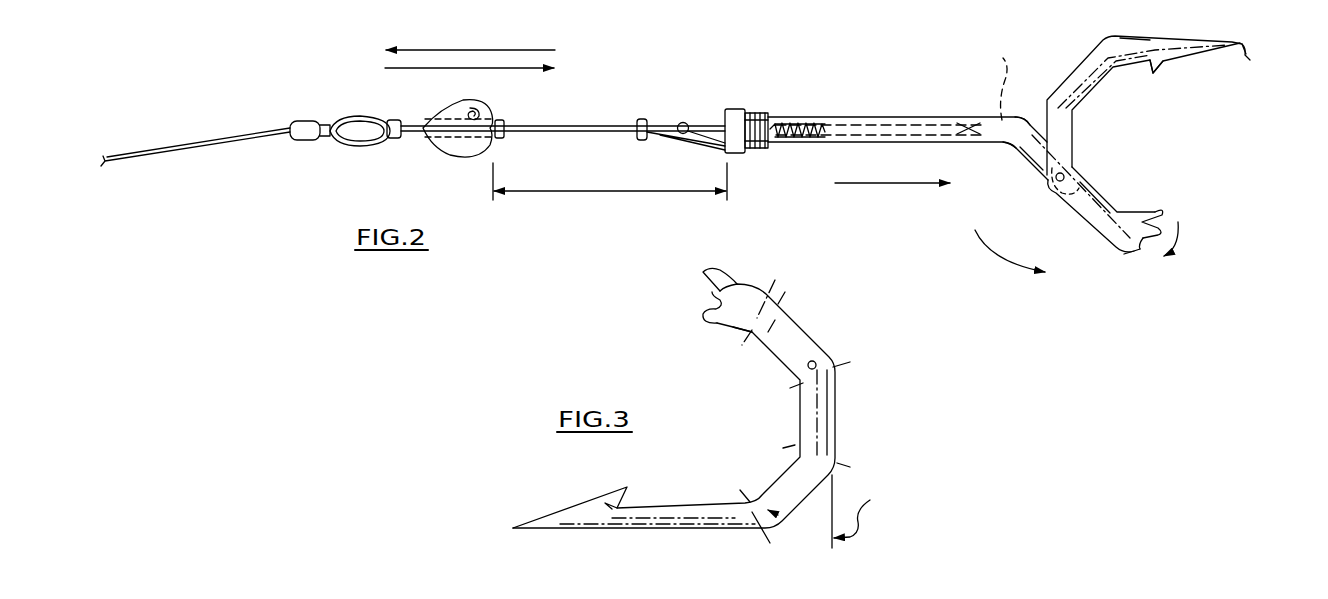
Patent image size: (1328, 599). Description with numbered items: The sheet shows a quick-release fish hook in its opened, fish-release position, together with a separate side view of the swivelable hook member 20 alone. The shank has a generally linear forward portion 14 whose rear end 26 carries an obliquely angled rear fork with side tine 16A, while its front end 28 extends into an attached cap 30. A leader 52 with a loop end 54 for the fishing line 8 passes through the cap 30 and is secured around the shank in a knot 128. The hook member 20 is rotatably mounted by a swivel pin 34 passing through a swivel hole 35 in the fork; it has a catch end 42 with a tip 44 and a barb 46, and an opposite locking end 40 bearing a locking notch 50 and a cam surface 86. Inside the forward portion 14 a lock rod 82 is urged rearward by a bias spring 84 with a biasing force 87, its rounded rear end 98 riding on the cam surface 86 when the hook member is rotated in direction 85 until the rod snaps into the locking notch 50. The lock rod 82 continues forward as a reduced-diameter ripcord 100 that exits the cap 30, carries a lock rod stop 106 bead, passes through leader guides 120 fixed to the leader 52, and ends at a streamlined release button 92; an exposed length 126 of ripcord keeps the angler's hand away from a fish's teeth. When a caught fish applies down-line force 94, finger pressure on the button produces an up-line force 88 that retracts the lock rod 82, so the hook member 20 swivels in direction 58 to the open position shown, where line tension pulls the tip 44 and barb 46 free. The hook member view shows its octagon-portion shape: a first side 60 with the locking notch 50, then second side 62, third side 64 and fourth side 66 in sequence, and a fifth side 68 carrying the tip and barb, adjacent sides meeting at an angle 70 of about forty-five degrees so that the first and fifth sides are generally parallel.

In FIG. 2, the fishing line 8 is at (222, 152).
In FIG. 2, the forward portion 14 is at (827, 117).
In FIG. 2, the side tine 16A is at (1045, 174).
In FIG. 2, the hook member 20 is at (1085, 110).
In FIG. 2, the rear end 26 is at (1006, 146).
In FIG. 2, the front end 28 is at (1028, 120).
In FIG. 2, the cap 30 is at (736, 108).
In FIG. 2, the swivel pin 34 is at (1060, 195).
In FIG. 3, the swivel hole 35 is at (818, 362).
In FIG. 2, the locking end 40 is at (1140, 243).
In FIG. 2, the catch end 42 is at (1138, 50).
In FIG. 2, the tip 44 is at (1246, 54).
In FIG. 2, the barb 46 is at (1156, 66).
In FIG. 2, the locking notch 50 is at (1150, 214).
In FIG. 2, the leader 52 is at (408, 140).
In FIG. 2, the loop end 54 is at (340, 144).
In FIG. 2, the direction 58 is at (997, 262).
In FIG. 3, the first side 60 is at (752, 290).
In FIG. 3, the second side 62 is at (785, 330).
In FIG. 3, the third side 64 is at (818, 436).
In FIG. 3, the fourth side 66 is at (785, 484).
In FIG. 3, the fifth side 68 is at (702, 515).
In FIG. 3, the angle 70 is at (832, 511).
In FIG. 2, the lock rod 82 is at (950, 120).
In FIG. 2, the bias spring 84 is at (800, 139).
In FIG. 2, the direction 85 is at (1180, 236).
In FIG. 2, the cam surface 86 is at (1128, 254).
In FIG. 2, the biasing force 87 is at (886, 186).
In FIG. 2, the up-line force 88 is at (500, 50).
In FIG. 2, the release button 92 is at (451, 142).
In FIG. 2, the down-line force 94 is at (508, 70).
In FIG. 2, the rear end 98 is at (964, 58).
In FIG. 2, the ripcord 100 is at (555, 125).
In FIG. 2, the lock rod stop 106 is at (687, 123).
In FIG. 2, the leader guide 120 is at (643, 118).
In FIG. 2, the exposed length 126 is at (585, 190).
In FIG. 2, the knot 128 is at (755, 112).